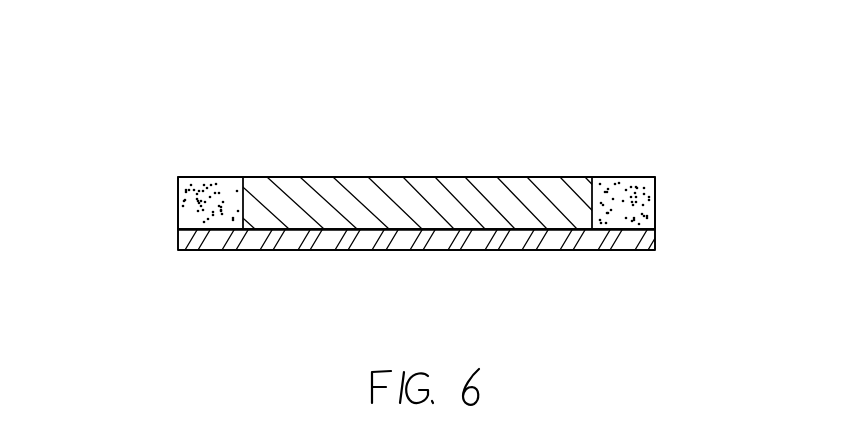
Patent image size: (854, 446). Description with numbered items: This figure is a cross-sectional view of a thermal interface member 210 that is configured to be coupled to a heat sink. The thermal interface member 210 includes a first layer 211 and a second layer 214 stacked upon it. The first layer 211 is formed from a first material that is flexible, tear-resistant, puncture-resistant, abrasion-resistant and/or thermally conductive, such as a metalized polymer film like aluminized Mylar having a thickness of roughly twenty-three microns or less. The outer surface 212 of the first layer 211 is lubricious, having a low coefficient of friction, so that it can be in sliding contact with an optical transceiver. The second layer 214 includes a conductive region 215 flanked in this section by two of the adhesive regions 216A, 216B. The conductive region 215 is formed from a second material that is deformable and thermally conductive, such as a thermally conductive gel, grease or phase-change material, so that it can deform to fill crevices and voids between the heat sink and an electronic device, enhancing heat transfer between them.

The thermal interface member 210 is at (781, 118).
The first layer 211 is at (657, 244).
The outer surface 212 is at (465, 250).
The second layer 214 is at (180, 207).
The conductive region 215 is at (430, 201).
The adhesive region 216A is at (206, 193).
The adhesive region 216B is at (638, 184).